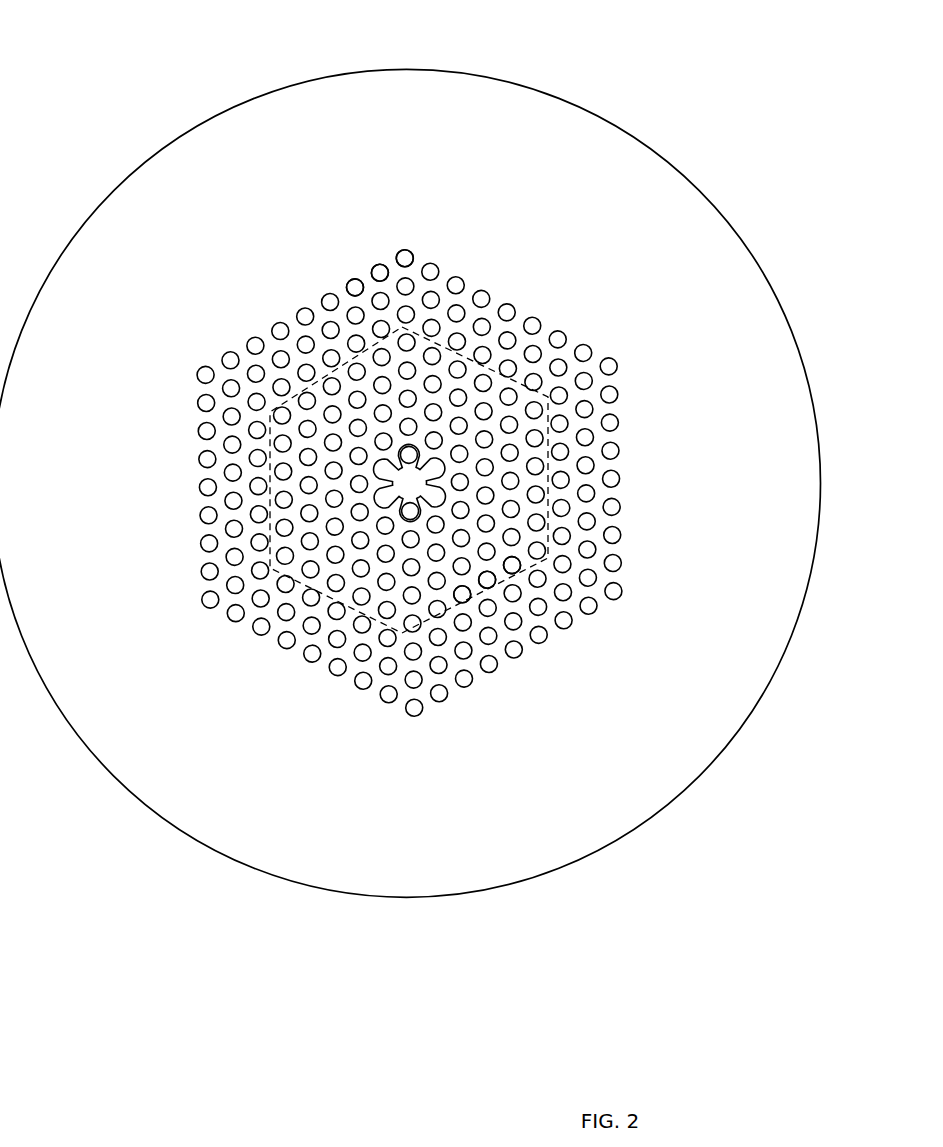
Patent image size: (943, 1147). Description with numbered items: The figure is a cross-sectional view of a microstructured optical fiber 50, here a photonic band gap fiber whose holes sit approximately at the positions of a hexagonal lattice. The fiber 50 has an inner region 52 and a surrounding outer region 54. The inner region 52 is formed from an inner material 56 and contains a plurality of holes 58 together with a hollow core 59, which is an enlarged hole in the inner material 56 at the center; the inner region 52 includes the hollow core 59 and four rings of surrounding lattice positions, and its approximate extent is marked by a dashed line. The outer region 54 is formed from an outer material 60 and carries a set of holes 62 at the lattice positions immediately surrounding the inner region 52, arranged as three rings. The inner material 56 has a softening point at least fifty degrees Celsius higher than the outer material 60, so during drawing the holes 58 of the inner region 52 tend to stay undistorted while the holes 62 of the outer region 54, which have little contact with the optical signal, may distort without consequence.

The microstructured optical fiber 50 is at (124, 102).
The inner region 52 is at (402, 633).
The outer region 54 is at (127, 792).
The inner material 56 is at (325, 570).
The holes 58 is at (512, 565).
The hollow core 59 is at (405, 487).
The outer material 60 is at (542, 230).
The holes 62 is at (405, 258).